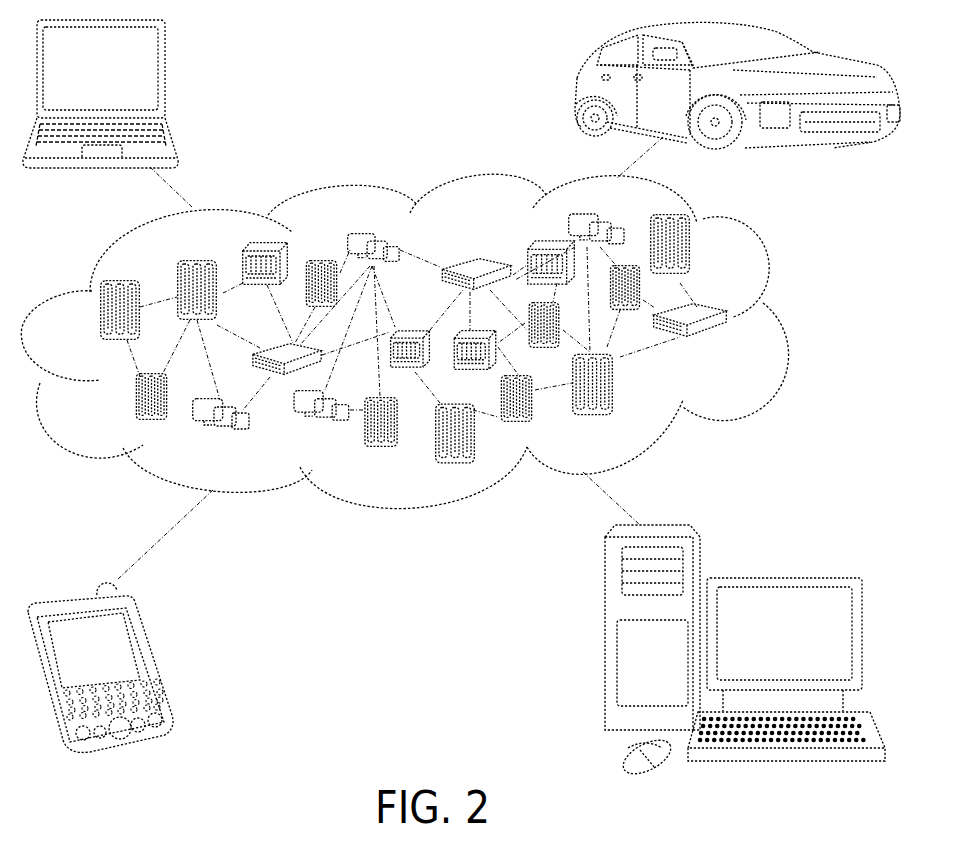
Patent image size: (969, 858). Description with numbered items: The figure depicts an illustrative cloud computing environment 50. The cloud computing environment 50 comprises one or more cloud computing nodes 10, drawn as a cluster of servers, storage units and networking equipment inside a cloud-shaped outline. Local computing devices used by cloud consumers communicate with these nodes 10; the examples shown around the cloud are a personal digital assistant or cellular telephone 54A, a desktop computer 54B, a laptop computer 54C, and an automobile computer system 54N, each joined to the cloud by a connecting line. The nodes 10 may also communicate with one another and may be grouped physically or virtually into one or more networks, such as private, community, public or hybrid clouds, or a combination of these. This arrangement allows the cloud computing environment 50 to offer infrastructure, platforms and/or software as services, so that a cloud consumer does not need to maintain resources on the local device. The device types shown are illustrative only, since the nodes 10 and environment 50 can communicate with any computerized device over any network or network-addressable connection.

The cloud computing node 10 is at (728, 346).
The cloud computing environment 50 is at (785, 318).
The personal digital assistant or cellular telephone 54A is at (155, 662).
The desktop computer 54B is at (783, 575).
The laptop computer 54C is at (165, 77).
The automobile computer system 54N is at (575, 92).